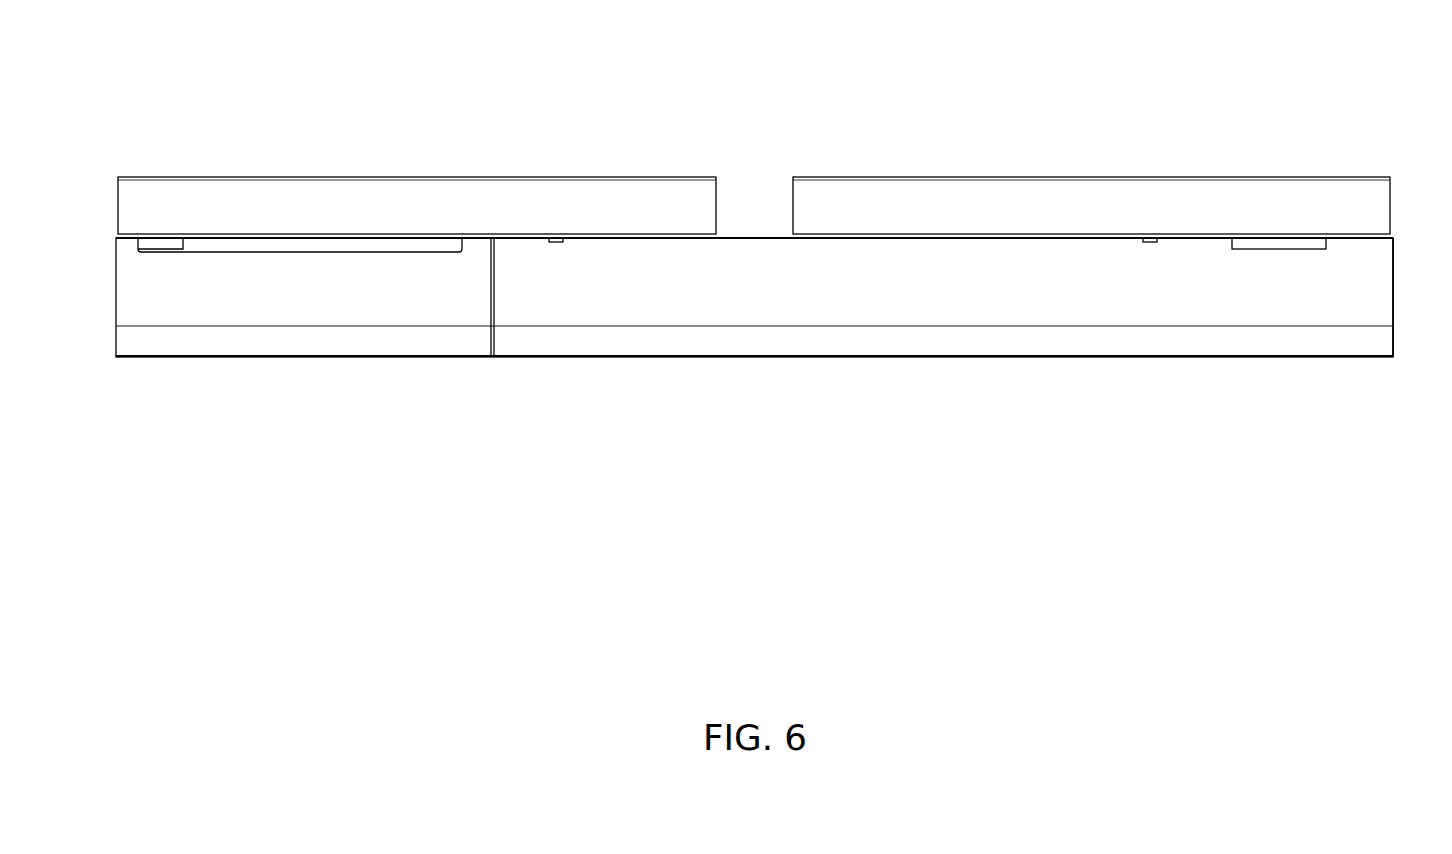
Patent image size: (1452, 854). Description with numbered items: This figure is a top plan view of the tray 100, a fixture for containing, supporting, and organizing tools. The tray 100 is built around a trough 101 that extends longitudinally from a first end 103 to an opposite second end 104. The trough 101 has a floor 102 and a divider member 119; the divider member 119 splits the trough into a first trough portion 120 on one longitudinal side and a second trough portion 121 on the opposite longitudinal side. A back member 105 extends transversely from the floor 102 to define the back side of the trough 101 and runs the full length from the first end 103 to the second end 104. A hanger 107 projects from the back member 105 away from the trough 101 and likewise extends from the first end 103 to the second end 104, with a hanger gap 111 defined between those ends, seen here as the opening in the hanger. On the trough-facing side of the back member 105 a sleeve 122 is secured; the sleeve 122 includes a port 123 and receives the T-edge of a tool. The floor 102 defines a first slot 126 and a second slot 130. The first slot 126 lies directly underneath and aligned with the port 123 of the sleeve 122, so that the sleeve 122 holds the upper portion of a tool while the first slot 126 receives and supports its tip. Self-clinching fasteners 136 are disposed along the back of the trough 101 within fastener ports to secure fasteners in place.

The tray 100 is at (505, 112).
The trough 101 is at (1077, 255).
The floor 102 is at (666, 297).
The first end 103 is at (114, 290).
The second end 104 is at (1393, 296).
The back member 105 is at (852, 240).
The hanger 107 is at (957, 198).
The hanger gap 111 is at (718, 198).
The divider member 119 is at (493, 296).
The first trough portion 120 is at (170, 314).
The second trough portion 121 is at (763, 306).
The sleeve 122 is at (376, 259).
The port 123 is at (306, 246).
The first slot 126 is at (272, 246).
The second slot 130 is at (1280, 250).
The self-clinching fasteners 136 is at (556, 243).